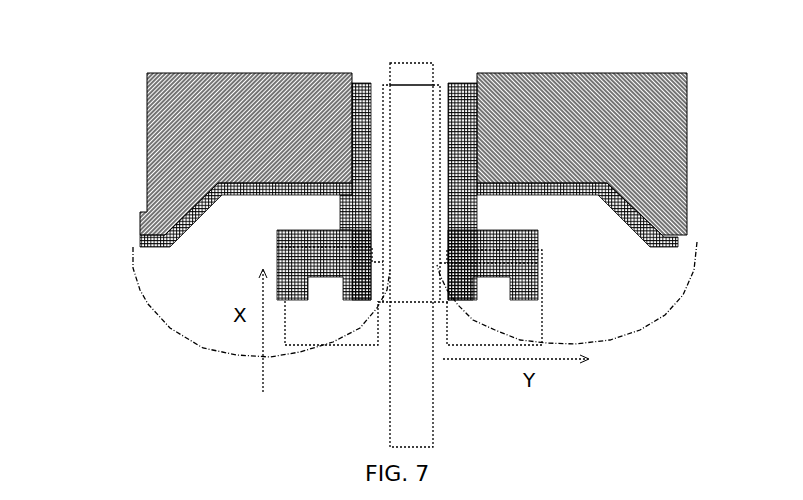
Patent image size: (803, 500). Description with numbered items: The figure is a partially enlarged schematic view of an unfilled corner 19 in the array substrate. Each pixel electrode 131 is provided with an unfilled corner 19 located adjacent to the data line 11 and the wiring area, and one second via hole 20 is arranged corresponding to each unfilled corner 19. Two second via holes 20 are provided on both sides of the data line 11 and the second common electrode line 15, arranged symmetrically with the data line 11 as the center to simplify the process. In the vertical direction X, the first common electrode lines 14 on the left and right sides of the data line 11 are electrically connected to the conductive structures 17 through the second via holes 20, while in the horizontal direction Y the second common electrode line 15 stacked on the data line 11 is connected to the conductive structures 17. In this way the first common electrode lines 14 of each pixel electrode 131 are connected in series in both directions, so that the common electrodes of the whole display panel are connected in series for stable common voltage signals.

The data line 11 is at (403, 72).
The second common electrode line 15 is at (436, 78).
The pixel electrode 131 is at (688, 122).
The first common electrode line 14 is at (300, 246).
The second via hole 20 is at (470, 306).
The conductive structure 17 is at (297, 335).
The unfilled corner 19 is at (133, 244).